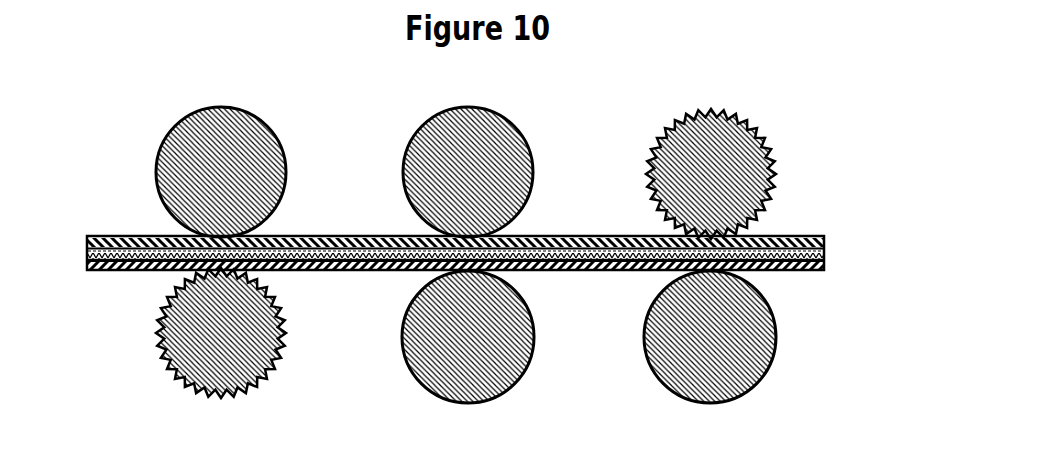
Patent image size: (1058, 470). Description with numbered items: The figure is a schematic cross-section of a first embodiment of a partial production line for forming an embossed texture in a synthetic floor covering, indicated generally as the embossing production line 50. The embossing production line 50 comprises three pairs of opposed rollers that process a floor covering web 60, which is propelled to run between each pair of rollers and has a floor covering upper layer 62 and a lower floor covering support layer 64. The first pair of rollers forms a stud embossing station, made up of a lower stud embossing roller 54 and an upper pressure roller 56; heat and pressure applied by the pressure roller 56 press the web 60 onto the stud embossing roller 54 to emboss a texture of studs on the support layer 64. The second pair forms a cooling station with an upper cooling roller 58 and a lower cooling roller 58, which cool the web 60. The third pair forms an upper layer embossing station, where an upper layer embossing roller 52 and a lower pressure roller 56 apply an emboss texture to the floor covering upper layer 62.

The embossing production line 50 is at (130, 202).
The upper layer embossing roller 52 is at (717, 142).
The stud embossing roller 54 is at (208, 350).
The pressure roller 56 is at (198, 160).
The cooling roller 58 is at (472, 142).
The floor covering web 60 is at (301, 236).
The floor covering upper layer 62 is at (547, 237).
The bottom layer 64 is at (348, 272).